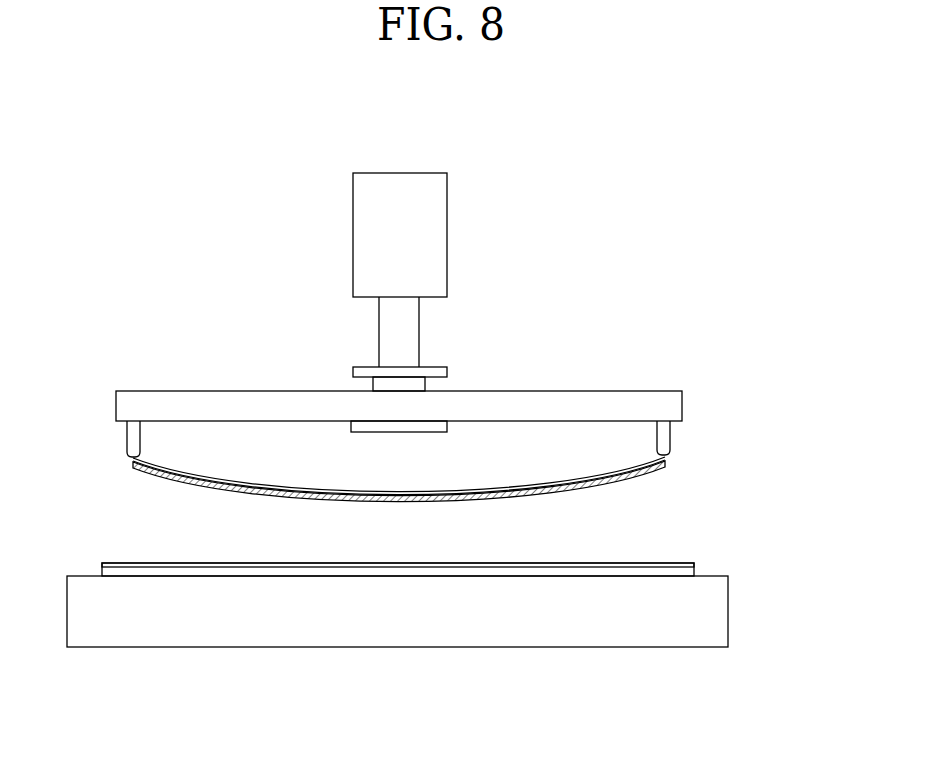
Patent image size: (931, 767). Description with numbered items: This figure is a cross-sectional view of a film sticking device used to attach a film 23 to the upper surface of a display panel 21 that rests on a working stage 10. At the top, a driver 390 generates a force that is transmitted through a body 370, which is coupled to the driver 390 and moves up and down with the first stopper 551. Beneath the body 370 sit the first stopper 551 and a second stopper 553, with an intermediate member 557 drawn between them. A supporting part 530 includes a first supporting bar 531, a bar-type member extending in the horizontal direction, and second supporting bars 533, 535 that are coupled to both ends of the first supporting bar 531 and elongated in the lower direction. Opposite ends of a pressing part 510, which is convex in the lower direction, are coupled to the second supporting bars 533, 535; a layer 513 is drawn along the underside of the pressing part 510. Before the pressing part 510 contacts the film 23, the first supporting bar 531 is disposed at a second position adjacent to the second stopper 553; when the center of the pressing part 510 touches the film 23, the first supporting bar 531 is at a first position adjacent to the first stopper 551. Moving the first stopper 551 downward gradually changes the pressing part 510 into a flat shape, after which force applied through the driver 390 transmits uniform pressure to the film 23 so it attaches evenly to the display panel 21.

The driver 390 is at (443, 220).
The body 370 is at (391, 334).
The first stopper 551 is at (435, 372).
The connecting member 557 is at (417, 382).
The second stopper 553 is at (435, 424).
The supporting part 530 is at (441, 350).
The first supporting bar 531 is at (212, 400).
The second supporting bar 533 is at (132, 437).
The second supporting bar 535 is at (666, 436).
The pressing part 510 is at (243, 486).
The adhesive layer 513 is at (262, 508).
The film 23 is at (683, 563).
The display panel 21 is at (695, 572).
The working stage 10 is at (712, 607).